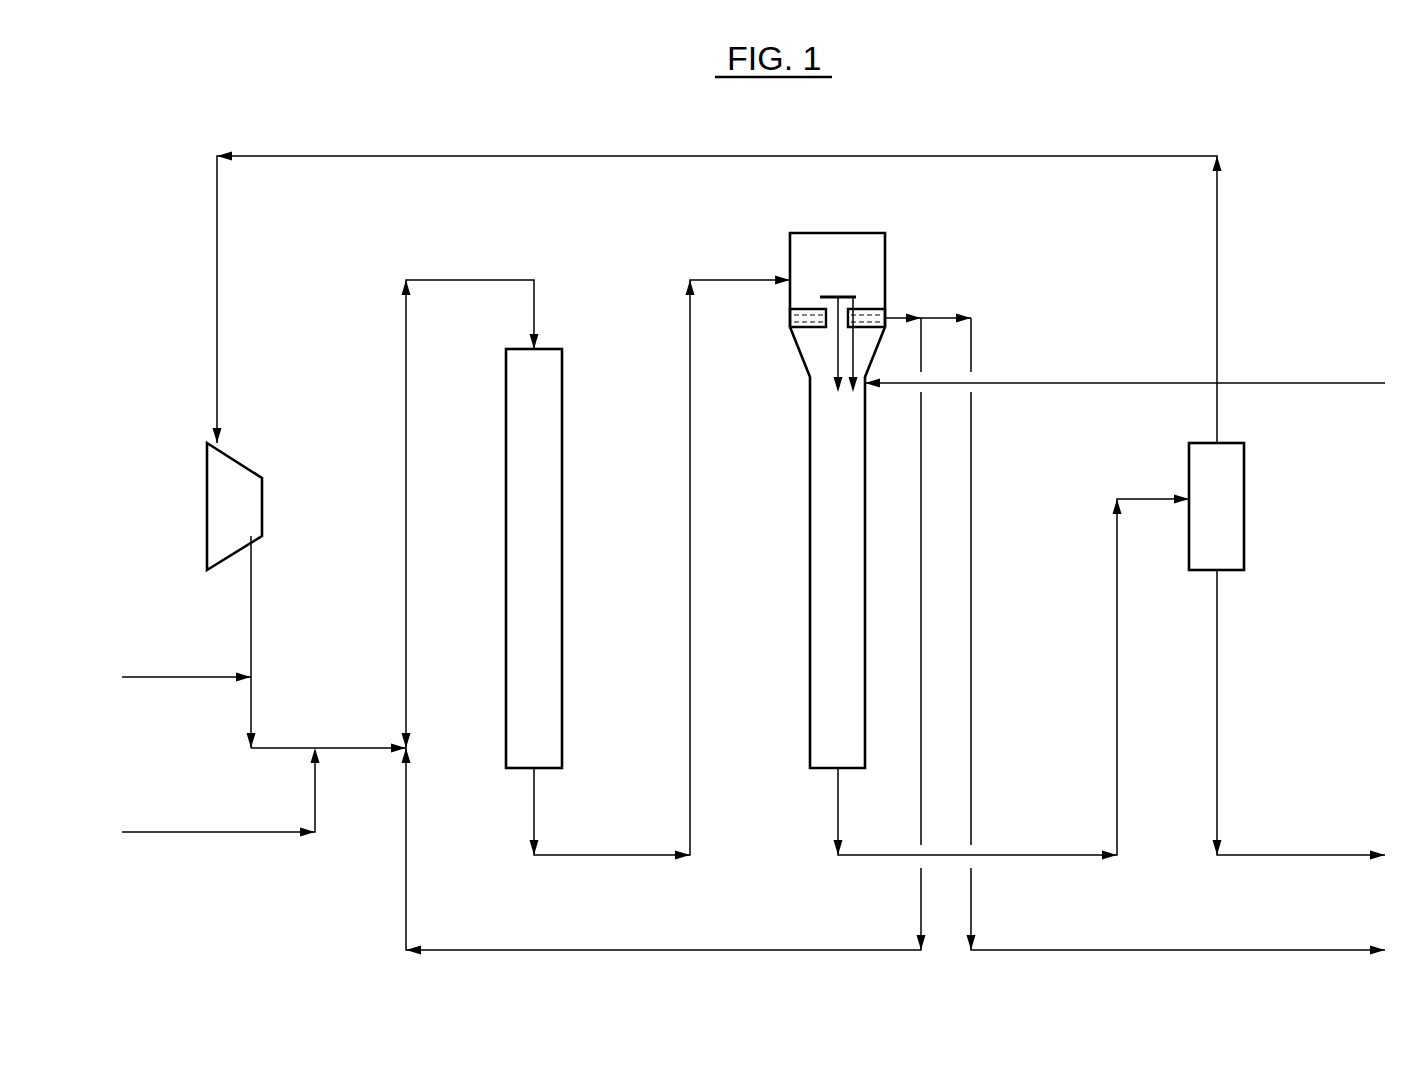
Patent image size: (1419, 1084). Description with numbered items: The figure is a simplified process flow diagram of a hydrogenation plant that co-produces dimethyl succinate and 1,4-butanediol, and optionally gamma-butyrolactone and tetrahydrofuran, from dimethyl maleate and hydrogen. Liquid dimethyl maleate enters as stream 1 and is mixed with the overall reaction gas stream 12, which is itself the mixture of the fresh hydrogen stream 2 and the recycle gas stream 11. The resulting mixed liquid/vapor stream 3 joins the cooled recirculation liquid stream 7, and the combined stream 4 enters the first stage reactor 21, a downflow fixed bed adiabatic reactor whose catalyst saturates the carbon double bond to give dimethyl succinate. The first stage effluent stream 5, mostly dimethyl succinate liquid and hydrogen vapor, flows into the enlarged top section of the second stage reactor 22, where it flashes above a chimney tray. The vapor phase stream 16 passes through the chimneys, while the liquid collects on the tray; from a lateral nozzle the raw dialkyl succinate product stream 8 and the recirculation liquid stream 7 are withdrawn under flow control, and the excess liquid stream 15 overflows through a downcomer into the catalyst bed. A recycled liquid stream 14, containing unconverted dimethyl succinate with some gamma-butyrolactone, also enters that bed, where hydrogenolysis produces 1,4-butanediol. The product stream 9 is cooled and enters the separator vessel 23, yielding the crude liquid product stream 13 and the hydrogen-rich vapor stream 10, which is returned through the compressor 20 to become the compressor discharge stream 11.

The dimethyl maleate feed stream 1 is at (221, 792).
The fresh hydrogen stream 2 is at (186, 667).
The mixed liquid/vapor stream 3 is at (370, 739).
The first stage inlet stream 4 is at (470, 503).
The first stage effluent stream 5 is at (660, 568).
The recirculation liquid stream 7 is at (664, 634).
The raw dialkyl succinate product stream 8 is at (1153, 634).
The second stage product stream 9 is at (1012, 677).
The vapor phase recycle gas stream 10 is at (730, 298).
The compressor discharge stream 11 is at (265, 642).
The overall reaction gas stream 12 is at (290, 738).
The crude liquid product stream 13 is at (1299, 715).
The recycled liquid stream 14 is at (1125, 374).
The second stage liquid feed stream 15 is at (854, 359).
The vapor phase stream 16 is at (829, 359).
The compressor 20 is at (237, 506).
The first stage reactor 21 is at (539, 546).
The second stage reactor 22 is at (851, 488).
The separator vessel 23 is at (1235, 506).